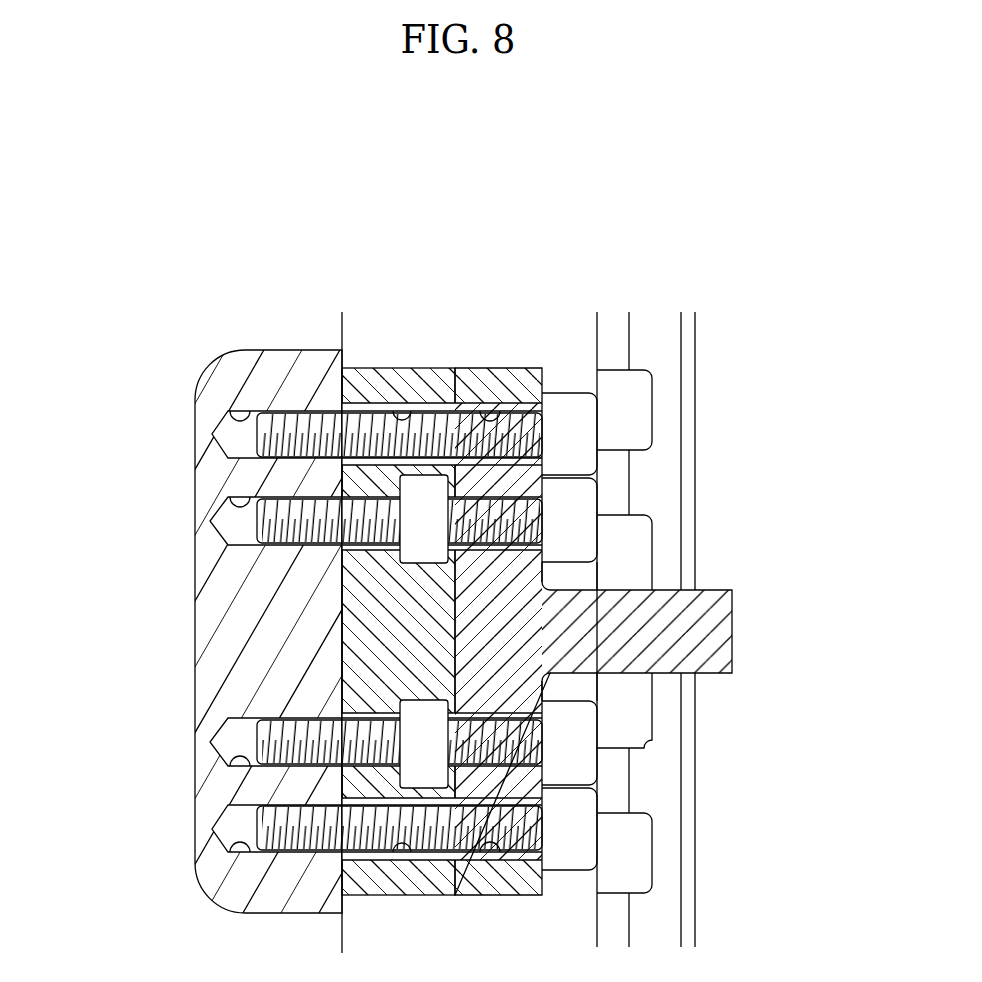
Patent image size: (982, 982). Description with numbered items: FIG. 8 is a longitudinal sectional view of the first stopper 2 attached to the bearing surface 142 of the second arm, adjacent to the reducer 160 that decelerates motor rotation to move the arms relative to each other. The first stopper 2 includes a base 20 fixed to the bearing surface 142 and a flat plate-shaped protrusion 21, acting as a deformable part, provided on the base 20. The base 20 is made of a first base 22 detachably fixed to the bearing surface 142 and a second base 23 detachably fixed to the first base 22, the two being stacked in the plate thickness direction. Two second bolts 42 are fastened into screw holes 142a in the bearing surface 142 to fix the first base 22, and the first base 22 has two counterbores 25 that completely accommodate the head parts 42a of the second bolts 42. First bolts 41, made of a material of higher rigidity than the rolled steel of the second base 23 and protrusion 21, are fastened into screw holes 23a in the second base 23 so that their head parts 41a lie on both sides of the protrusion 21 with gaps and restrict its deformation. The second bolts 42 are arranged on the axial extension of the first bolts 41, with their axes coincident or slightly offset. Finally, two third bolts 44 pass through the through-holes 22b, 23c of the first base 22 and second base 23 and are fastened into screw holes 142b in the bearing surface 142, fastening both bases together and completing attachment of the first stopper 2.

The first stopper 2 is at (614, 207).
The base 20 is at (405, 222).
The protrusion 21 is at (735, 620).
The first base 22 is at (440, 368).
The through-hole 22b is at (317, 377).
The second base 23 is at (520, 368).
The screw hole 23a is at (548, 512).
The through-hole 23c is at (490, 408).
The counterbore 25 is at (433, 478).
The first bolt 41 is at (614, 507).
The head part 41a is at (600, 541).
The second bolt 42 is at (232, 558).
The head part 42a is at (400, 560).
The third bolt 44 is at (566, 380).
The bearing surface 142 is at (345, 358).
The screw hole 142a is at (230, 505).
The screw hole 142b is at (242, 418).
The reducer 160 is at (600, 337).